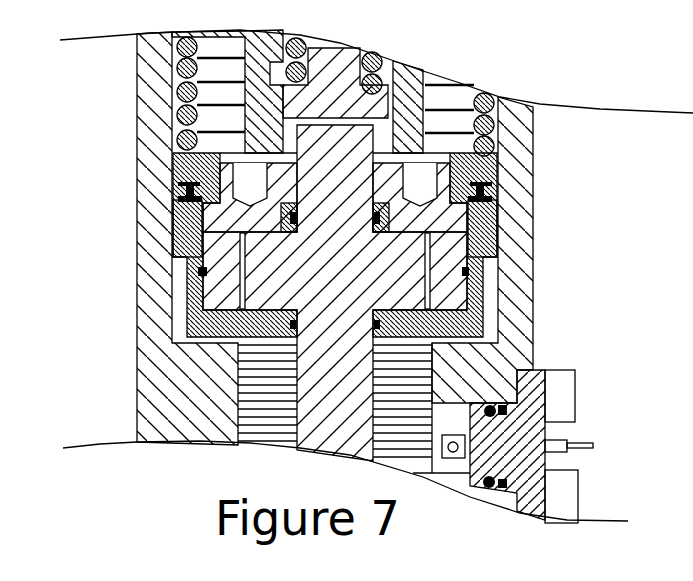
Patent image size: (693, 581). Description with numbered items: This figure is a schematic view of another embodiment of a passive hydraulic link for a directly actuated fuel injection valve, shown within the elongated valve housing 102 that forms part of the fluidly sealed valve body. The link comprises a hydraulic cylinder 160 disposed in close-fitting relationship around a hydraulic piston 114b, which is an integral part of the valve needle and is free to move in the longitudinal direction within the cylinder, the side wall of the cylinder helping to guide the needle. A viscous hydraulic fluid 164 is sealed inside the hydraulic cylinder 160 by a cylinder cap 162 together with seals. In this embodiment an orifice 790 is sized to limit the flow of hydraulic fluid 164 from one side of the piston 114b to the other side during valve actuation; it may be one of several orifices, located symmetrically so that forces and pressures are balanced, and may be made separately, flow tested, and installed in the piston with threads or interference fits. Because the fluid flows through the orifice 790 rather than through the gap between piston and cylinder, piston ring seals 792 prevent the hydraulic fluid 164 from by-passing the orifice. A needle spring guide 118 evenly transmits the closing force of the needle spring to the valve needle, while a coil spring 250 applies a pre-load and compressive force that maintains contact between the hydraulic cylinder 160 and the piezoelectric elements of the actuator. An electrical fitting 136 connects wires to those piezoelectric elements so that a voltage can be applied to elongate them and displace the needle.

The valve housing 102 is at (145, 378).
The needle spring guide 118 is at (407, 63).
The coil spring 250 is at (500, 97).
The cylinder cap 162 is at (180, 147).
The hydraulic fluid 164 is at (182, 190).
The orifice 790 is at (182, 231).
The piston ring seals 792 is at (200, 270).
The hydraulic piston 114b is at (433, 252).
The hydraulic cylinder 160 is at (480, 305).
The electrical fitting 136 is at (520, 420).